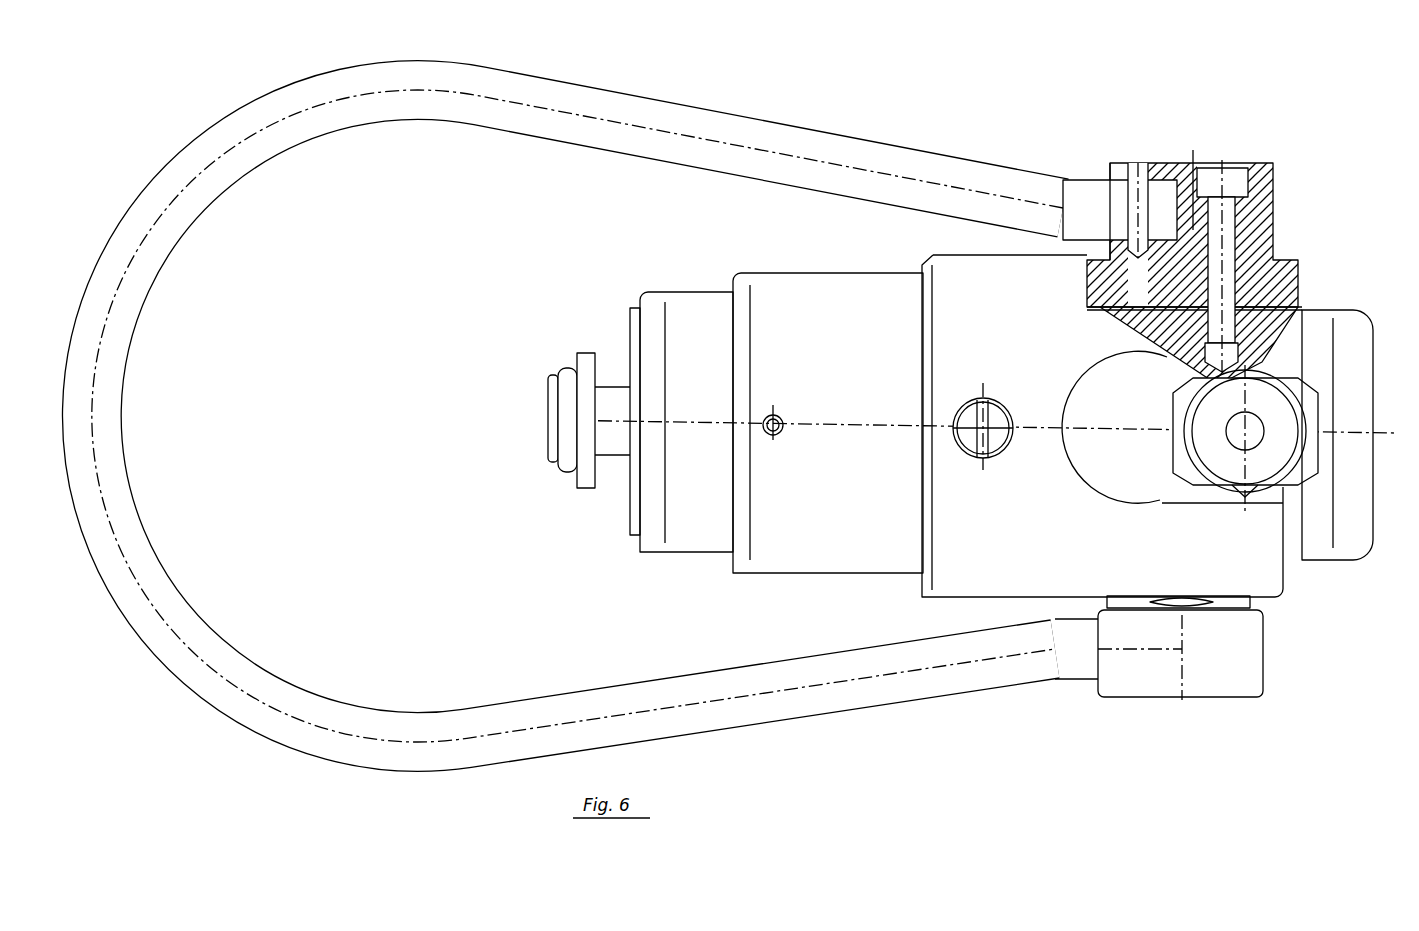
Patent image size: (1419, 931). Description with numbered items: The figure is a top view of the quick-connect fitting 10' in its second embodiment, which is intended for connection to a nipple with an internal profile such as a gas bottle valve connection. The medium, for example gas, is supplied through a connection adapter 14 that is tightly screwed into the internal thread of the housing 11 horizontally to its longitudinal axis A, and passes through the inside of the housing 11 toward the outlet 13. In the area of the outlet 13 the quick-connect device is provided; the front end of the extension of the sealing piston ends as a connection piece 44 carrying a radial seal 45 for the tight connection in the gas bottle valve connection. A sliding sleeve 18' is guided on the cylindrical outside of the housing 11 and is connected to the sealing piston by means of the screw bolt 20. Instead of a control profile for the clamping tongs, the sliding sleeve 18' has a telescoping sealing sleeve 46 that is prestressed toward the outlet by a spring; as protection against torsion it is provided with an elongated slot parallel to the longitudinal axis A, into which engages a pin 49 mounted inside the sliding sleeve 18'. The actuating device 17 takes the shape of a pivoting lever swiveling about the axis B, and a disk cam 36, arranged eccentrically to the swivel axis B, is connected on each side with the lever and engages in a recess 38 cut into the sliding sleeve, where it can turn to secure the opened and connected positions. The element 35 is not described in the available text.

The quick-connect fitting 10' is at (577, 434).
The actuating device 17 is at (843, 695).
The longitudinal axis A is at (1410, 406).
The outlet 13 is at (531, 420).
The connection piece 44 is at (555, 383).
The radial seal 45 is at (570, 458).
The telescoping sealing sleeve 46 is at (712, 530).
The pin 49 is at (773, 440).
The sliding sleeve 18' is at (1112, 431).
The screw bolt 20 is at (970, 437).
The disk cam 36 is at (1160, 263).
The recess 38 is at (1105, 263).
The swivel axis B is at (1222, 165).
The round boss 35 is at (1160, 475).
The connection adapter 14 is at (1290, 487).
The housing 11 is at (1345, 355).